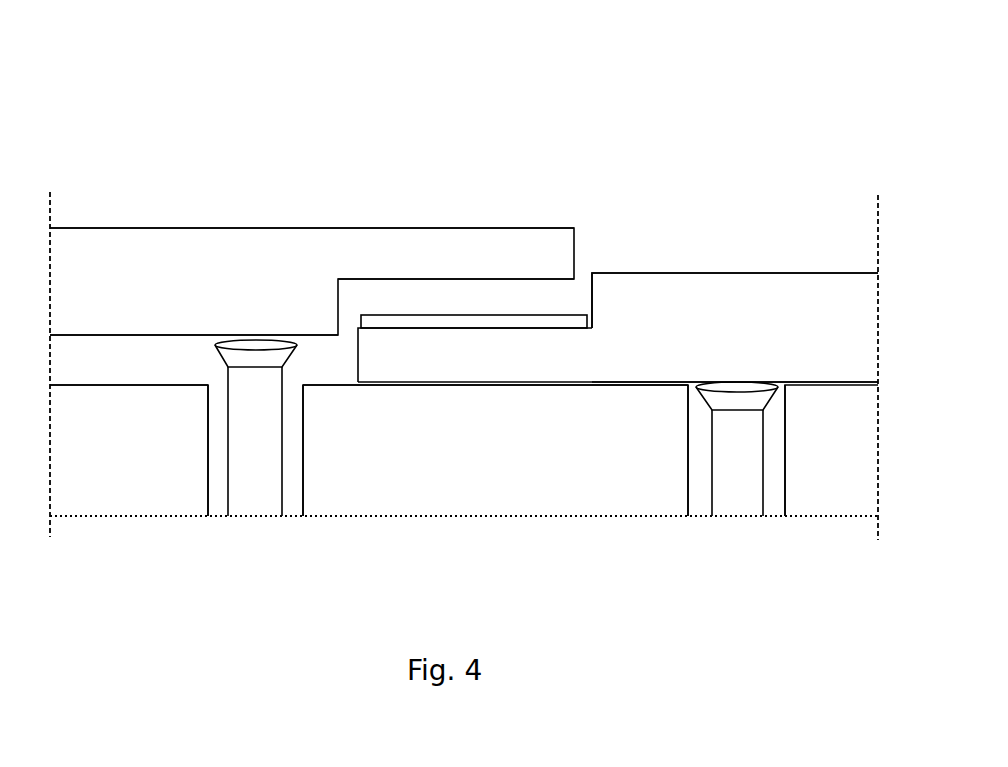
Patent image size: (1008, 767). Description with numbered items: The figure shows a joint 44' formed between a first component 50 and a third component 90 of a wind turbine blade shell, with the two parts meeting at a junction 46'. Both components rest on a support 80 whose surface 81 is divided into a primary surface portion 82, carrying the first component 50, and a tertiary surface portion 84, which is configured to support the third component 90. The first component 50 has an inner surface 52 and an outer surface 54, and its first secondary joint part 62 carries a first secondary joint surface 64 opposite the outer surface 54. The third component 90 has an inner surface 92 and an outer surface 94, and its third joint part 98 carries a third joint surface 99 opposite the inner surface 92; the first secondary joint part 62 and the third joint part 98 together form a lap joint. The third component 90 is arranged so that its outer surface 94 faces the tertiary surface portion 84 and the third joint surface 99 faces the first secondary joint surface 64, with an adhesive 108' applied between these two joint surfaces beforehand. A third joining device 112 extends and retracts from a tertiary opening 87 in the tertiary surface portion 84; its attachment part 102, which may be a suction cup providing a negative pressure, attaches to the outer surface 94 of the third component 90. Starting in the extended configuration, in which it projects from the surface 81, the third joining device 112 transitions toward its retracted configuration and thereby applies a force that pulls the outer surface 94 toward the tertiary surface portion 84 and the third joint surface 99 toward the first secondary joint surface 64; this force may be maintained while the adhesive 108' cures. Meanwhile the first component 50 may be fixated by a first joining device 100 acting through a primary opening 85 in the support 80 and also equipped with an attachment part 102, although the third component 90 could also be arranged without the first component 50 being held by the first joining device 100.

The joint 44' is at (506, 57).
The junction 46' is at (615, 178).
The first component 50 is at (769, 297).
The inner surface 52 is at (667, 273).
The outer surface 54 is at (798, 380).
The first secondary joint part 62 is at (742, 196).
The first secondary joint surface 64 is at (522, 328).
The support 80 is at (446, 548).
The surface 81 is at (548, 388).
The primary surface portion 82 is at (623, 412).
The tertiary surface portion 84 is at (155, 407).
The primary opening 85 is at (772, 500).
The tertiary opening 87 is at (288, 495).
The third component 90 is at (229, 243).
The inner surface 92 is at (292, 228).
The outer surface 94 is at (117, 335).
The third joint part 98 is at (205, 158).
The third joint surface 99 is at (380, 278).
The first joining device 100 is at (737, 480).
The attachment part 102 is at (243, 345).
The adhesive 108' is at (474, 221).
The third joining device 112 is at (256, 470).